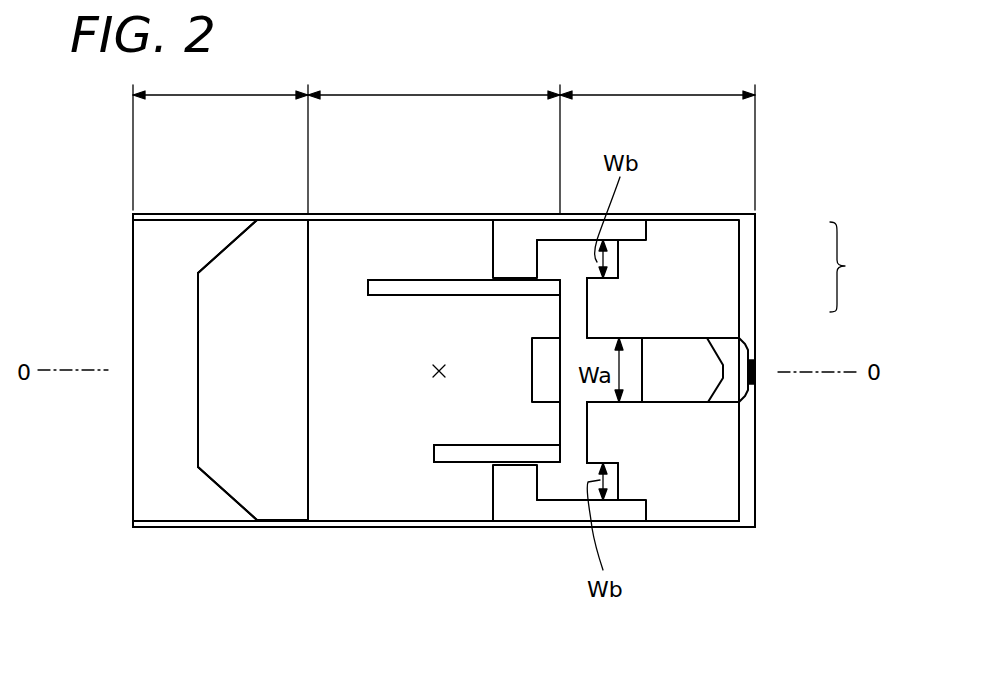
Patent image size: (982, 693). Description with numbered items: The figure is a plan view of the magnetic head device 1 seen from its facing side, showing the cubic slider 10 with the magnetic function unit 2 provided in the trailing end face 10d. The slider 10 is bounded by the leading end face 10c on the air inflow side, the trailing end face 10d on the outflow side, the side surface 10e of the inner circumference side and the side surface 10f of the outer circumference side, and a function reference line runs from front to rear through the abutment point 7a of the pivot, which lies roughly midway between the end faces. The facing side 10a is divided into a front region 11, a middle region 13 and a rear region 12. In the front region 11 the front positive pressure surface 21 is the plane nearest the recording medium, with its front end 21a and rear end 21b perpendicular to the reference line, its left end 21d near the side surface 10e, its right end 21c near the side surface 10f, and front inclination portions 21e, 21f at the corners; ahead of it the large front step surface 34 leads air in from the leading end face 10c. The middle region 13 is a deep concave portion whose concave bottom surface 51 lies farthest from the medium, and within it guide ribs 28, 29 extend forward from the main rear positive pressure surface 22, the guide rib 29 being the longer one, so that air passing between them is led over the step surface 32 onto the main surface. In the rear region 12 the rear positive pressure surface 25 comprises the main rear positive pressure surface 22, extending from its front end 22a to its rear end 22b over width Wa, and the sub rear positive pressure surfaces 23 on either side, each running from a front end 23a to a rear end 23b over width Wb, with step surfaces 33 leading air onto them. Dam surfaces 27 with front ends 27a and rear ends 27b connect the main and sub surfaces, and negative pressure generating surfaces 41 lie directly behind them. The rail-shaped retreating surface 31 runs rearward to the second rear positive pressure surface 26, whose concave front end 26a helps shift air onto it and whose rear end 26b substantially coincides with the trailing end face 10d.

The magnetic head device 1 is at (148, 536).
The magnetic function unit 2 is at (758, 365).
The abutment point 7a is at (440, 370).
The slider 10 is at (416, 540).
The facing side 10a is at (355, 483).
The leading end face 10c is at (132, 415).
The trailing end face 10d is at (758, 417).
The side surface of inner circumference side 10e is at (460, 528).
The side surface of outer circumference side 10f is at (435, 210).
The front region 11 is at (220, 142).
The rear region 12 is at (657, 140).
The middle region 13 is at (434, 142).
The front positive pressure surface 21 is at (284, 398).
The front end 21a is at (197, 435).
The rear end 21b is at (308, 318).
The right end 21c is at (275, 213).
The left end 21d is at (278, 528).
The front inclination portion 21e is at (195, 528).
The front inclination portion 21f is at (217, 256).
The main rear positive pressure surface 22 is at (693, 402).
The front end 22a is at (560, 385).
The rear end 22b is at (643, 362).
The sub rear positive pressure surface 23 is at (620, 253).
The front end 23a is at (537, 262).
The rear end 23b is at (620, 258).
The rear positive pressure surface 25 is at (852, 267).
The second rear positive pressure surface 26 is at (732, 406).
The front end 26a is at (688, 404).
The rear end 26b is at (753, 398).
The dam surface 27 is at (570, 310).
The front end 27a is at (550, 298).
The rear end 27b is at (592, 322).
The guide rib 28 is at (440, 462).
The guide rib 29 is at (377, 280).
The retreating surface 31 is at (712, 362).
The step surface 32 is at (547, 365).
The step surface 33 is at (510, 262).
The front step surface 34 is at (148, 308).
The negative pressure generating surface 41 is at (603, 302).
The concave bottom surface 51 is at (347, 253).